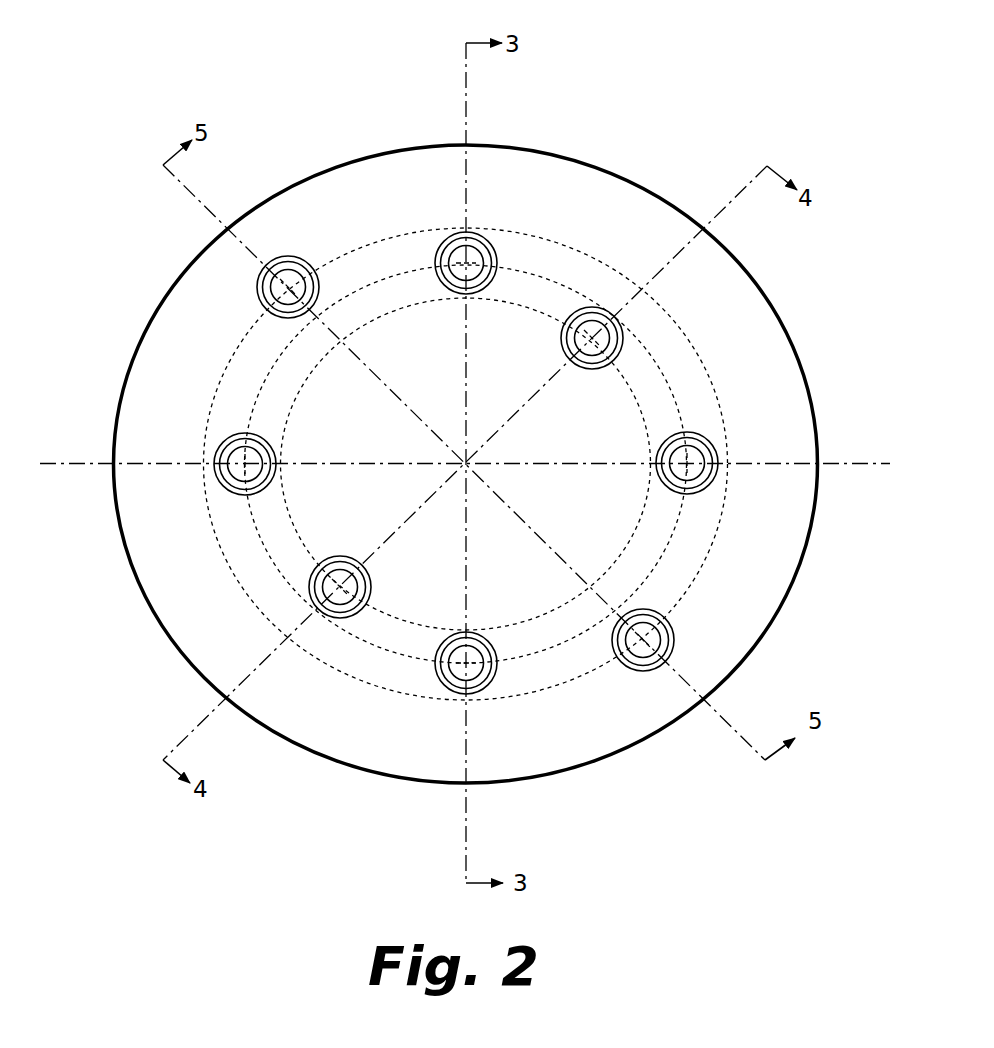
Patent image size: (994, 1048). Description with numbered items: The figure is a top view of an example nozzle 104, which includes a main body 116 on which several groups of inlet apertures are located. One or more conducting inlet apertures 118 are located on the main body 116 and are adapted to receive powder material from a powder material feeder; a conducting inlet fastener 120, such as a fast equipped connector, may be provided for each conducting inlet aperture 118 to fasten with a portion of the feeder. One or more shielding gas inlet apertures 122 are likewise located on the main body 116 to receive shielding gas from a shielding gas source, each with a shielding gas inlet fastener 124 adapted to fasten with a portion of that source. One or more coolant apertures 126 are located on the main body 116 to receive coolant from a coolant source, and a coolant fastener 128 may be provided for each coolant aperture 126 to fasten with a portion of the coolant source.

The nozzle 104 is at (147, 690).
The main body 116 is at (355, 770).
The conducting inlet aperture 118 is at (483, 240).
The conducting inlet fastener 120 is at (497, 258).
The shielding gas inlet aperture 122 is at (612, 337).
The shielding gas inlet fastener 124 is at (620, 310).
The coolant aperture 126 is at (320, 277).
The coolant fastener 128 is at (286, 257).